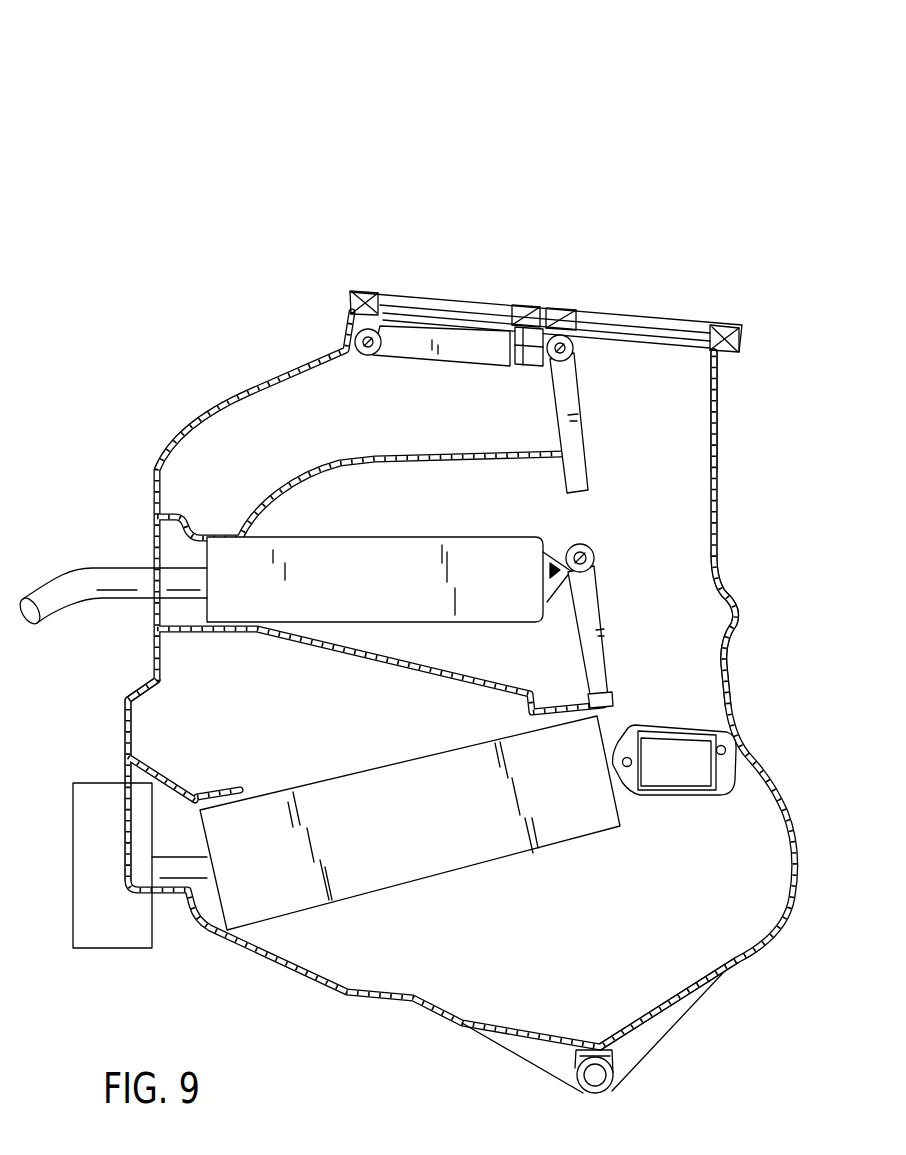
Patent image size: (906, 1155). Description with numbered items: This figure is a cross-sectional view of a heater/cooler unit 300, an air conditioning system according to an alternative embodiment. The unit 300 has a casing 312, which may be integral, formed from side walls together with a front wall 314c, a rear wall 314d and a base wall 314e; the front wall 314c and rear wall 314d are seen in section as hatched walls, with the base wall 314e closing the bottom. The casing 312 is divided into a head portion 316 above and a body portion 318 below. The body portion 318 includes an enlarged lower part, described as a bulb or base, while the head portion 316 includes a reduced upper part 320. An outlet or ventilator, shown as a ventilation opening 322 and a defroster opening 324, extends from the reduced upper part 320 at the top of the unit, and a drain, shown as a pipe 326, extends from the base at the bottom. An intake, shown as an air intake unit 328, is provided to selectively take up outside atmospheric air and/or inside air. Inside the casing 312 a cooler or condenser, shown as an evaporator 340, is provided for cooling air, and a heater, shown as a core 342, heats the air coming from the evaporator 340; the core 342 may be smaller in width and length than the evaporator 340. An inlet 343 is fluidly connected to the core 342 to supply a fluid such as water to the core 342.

The heater/cooler unit 300 is at (135, 78).
The casing 312 is at (769, 319).
The front wall 314c is at (717, 492).
The rear wall 314d is at (122, 720).
The base wall 314e is at (680, 1018).
The head portion 316 is at (767, 416).
The body portion 318 is at (769, 565).
The reduced upper part 320 is at (305, 320).
The ventilation opening 322 is at (605, 312).
The defroster opening 324 is at (410, 293).
The pipe 326 is at (603, 1093).
The air intake unit 328 is at (717, 723).
The evaporator 340 is at (296, 912).
The core 342 is at (303, 538).
The inlet 343 is at (82, 568).